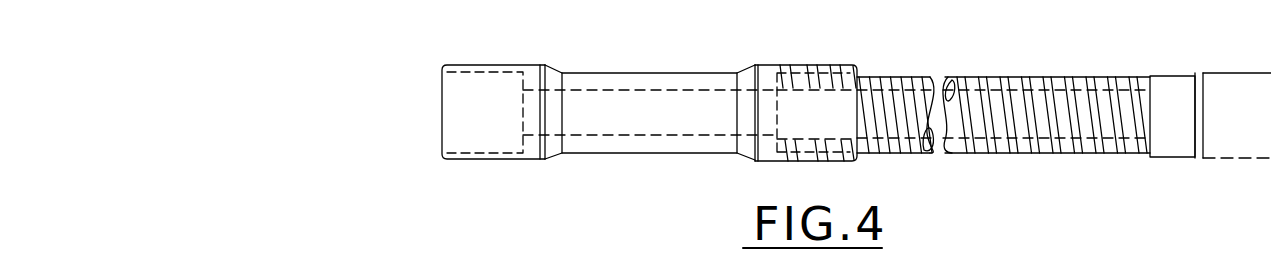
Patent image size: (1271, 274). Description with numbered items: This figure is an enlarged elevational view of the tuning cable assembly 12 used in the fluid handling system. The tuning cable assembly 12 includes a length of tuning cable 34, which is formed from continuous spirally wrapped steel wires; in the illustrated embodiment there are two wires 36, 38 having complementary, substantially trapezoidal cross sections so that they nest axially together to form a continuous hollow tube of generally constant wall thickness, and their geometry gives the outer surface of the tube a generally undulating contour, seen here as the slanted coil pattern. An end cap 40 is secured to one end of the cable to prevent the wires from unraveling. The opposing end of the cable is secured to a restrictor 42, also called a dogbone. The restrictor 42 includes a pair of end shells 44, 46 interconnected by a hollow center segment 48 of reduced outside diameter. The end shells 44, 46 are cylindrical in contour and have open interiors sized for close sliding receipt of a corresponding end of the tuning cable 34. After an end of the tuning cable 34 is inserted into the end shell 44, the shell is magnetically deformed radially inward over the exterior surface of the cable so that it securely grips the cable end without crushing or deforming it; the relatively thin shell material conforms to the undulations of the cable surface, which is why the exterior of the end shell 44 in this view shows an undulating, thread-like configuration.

The tuning cable assembly 12 is at (801, 106).
The tuning cable 34 is at (1003, 120).
The wire 36 is at (950, 152).
The wire 38 is at (1097, 153).
The end cap 40 is at (1223, 78).
The restrictor 42 is at (650, 110).
The end shell 44 is at (768, 158).
The end shell 46 is at (460, 162).
The hollow center segment 48 is at (660, 147).